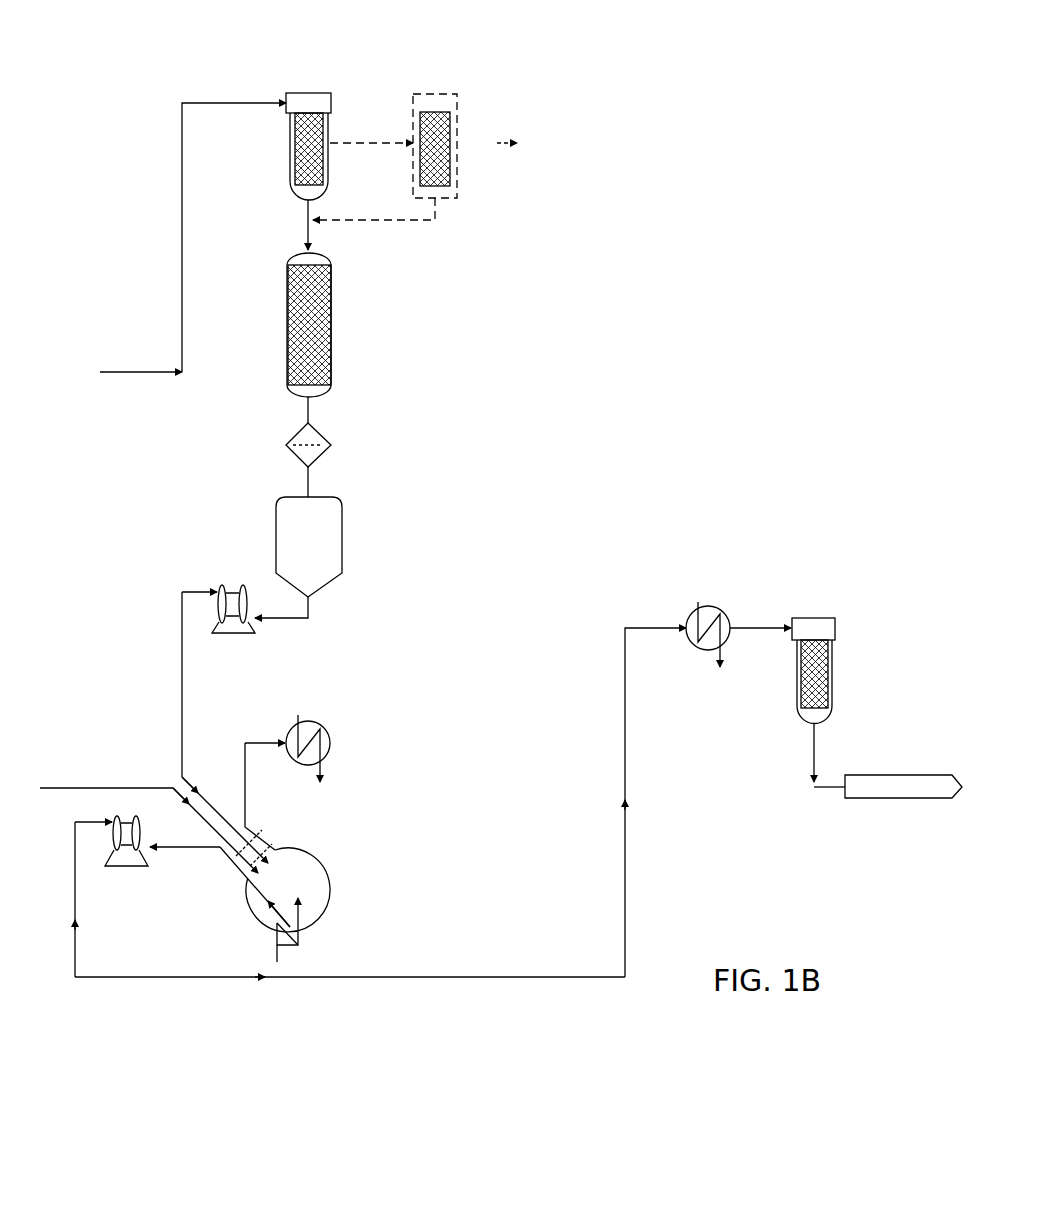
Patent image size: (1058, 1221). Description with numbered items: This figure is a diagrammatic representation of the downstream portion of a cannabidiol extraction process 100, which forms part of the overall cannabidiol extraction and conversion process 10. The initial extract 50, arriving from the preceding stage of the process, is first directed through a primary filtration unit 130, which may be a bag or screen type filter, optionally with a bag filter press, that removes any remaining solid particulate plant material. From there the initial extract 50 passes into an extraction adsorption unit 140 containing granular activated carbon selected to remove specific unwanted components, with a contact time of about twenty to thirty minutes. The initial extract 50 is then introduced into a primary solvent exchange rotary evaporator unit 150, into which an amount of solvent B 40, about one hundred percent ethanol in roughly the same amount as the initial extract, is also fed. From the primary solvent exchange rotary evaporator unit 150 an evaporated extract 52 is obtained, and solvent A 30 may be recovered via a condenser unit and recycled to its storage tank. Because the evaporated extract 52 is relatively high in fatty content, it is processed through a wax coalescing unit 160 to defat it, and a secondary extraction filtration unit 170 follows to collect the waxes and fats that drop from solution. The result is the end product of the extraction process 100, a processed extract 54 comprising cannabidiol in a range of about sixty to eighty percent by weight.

The cannabidiol extraction and conversion process 10 is at (588, 125).
The cannabidiol extraction process 100 is at (461, 1010).
The primary filtration unit 130 is at (360, 93).
The extraction adsorption unit 140 is at (365, 321).
The primary solvent exchange rotary evaporator unit 150 is at (343, 900).
The wax coalescing unit 160 is at (710, 588).
The secondary extraction filtration unit 170 is at (843, 668).
The solvent A 30 is at (331, 743).
The solvent B 40 is at (154, 815).
The initial extract 50 is at (193, 252).
The evaporated extract 52 is at (166, 846).
The processed extract 54 is at (888, 786).